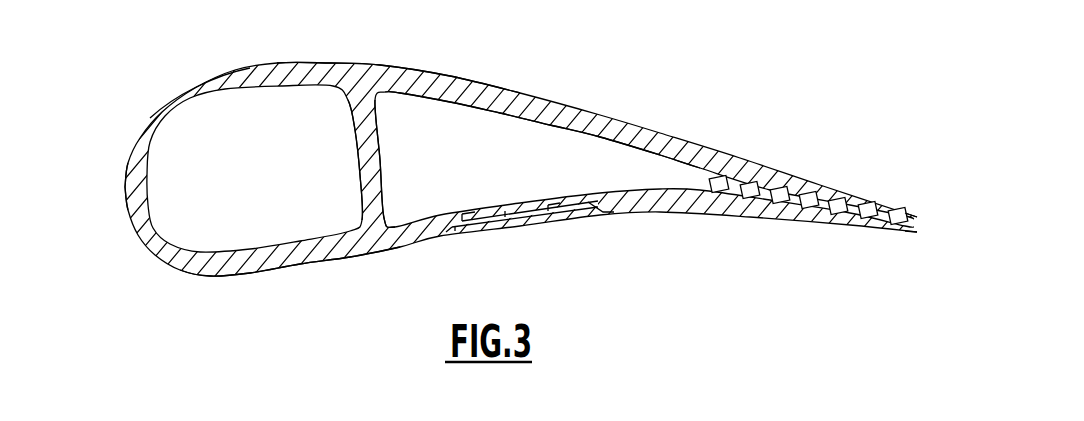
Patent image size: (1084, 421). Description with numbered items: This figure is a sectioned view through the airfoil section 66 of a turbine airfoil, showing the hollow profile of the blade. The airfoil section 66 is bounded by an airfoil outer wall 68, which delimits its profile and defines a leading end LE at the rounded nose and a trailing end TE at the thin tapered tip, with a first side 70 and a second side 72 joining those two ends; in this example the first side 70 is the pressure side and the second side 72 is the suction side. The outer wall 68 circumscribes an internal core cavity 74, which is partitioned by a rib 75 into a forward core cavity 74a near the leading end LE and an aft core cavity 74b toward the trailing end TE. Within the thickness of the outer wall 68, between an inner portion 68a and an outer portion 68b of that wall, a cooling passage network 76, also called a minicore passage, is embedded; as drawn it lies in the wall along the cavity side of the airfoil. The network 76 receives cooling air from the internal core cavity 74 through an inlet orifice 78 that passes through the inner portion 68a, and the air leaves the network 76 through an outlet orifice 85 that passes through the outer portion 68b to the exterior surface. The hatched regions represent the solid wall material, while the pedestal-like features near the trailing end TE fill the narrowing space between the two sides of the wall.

The airfoil section 66 is at (248, 282).
The airfoil outer wall 68 is at (284, 64).
The inner portion of the airfoil outer wall 68a is at (503, 205).
The outer portion of the airfoil outer wall 68b is at (507, 227).
The first side 70 is at (407, 236).
The second side 72 is at (382, 65).
The internal core cavity 74 is at (602, 175).
The forward core cavity 74a is at (258, 187).
The aft core cavity 74b is at (472, 164).
The rib 75 is at (349, 125).
The cooling passage network 76 is at (557, 228).
The inlet orifice 78 is at (466, 210).
The outlet orifice 85 is at (600, 213).
The leading end LE is at (118, 223).
The trailing end TE is at (916, 248).